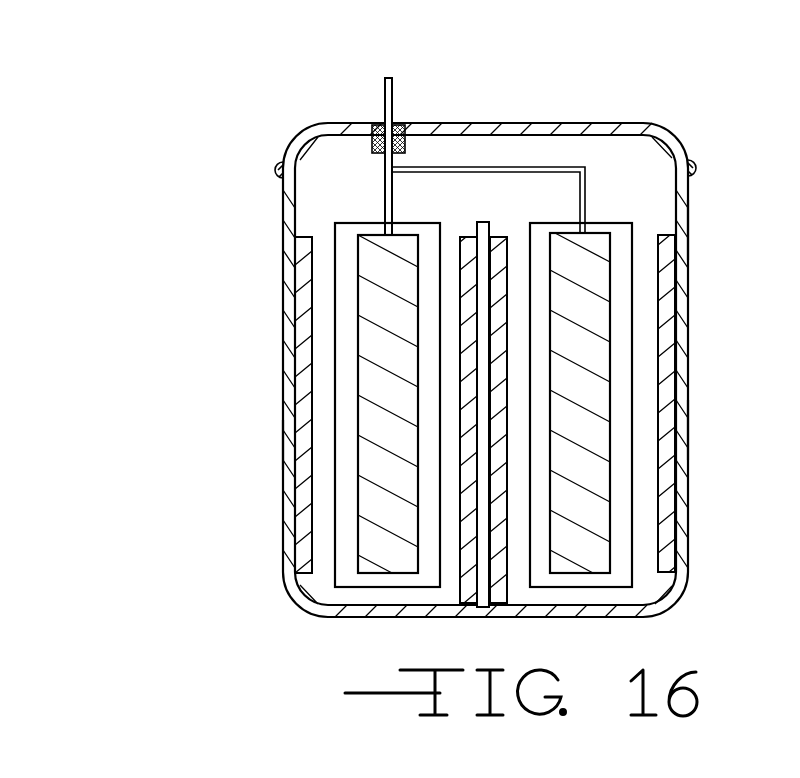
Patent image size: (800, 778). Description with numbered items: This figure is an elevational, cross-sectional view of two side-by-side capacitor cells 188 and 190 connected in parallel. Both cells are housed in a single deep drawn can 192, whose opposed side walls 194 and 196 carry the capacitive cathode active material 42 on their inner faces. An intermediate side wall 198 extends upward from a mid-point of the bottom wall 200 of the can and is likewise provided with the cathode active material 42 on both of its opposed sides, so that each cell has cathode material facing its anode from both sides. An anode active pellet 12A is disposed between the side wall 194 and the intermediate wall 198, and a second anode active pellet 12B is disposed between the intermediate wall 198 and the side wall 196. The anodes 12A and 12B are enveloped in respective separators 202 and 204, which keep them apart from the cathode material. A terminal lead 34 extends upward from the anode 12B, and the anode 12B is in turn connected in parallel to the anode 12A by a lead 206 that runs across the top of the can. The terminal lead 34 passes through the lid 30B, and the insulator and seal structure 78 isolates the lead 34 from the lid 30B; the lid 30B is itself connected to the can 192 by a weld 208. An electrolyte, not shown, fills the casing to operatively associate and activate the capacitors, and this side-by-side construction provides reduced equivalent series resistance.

The anode active pellet 12A is at (593, 283).
The anode active pellet 12B is at (364, 298).
The lid 30B is at (497, 122).
The terminal lead 34 is at (393, 92).
The capacitive cathode active material 42 is at (304, 358).
The insulator and seal structure 78 is at (372, 149).
The capacitor cell 188 is at (623, 184).
The capacitor cell 190 is at (347, 215).
The deep drawn can 192 is at (688, 228).
The side wall 194 is at (688, 432).
The side wall 196 is at (282, 447).
The intermediate side wall 198 is at (500, 607).
The bottom wall 200 is at (342, 618).
The separator 202 is at (632, 527).
The separator 204 is at (336, 516).
The lead 206 is at (543, 168).
The weld 208 is at (692, 168).